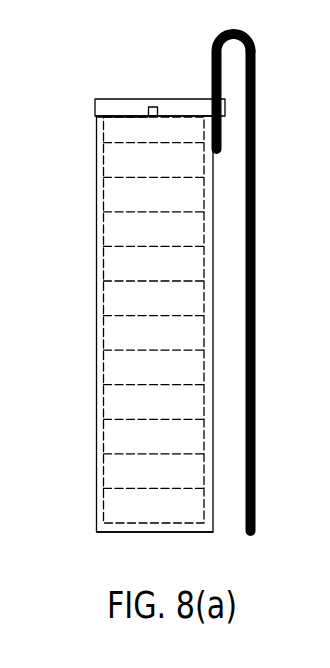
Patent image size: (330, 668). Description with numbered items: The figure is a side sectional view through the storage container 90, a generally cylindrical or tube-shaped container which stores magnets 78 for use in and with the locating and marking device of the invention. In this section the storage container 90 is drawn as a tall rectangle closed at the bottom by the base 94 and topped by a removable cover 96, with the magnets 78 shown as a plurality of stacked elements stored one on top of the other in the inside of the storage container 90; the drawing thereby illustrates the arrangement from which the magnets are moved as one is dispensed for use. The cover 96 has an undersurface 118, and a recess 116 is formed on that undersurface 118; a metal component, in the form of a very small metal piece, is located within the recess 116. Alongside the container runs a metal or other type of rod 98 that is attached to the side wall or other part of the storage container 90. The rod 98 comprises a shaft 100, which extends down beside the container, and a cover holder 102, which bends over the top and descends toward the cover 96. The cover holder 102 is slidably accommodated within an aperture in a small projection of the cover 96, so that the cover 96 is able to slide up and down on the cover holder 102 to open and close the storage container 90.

The storage container 90 is at (119, 339).
The magnets 78 is at (108, 367).
The base 94 is at (117, 533).
The removable cover 96 is at (113, 107).
The recess 116 is at (150, 107).
The undersurface 118 is at (148, 117).
The rod 98 is at (230, 282).
The cover holder 102 is at (210, 73).
The shaft 100 is at (257, 472).